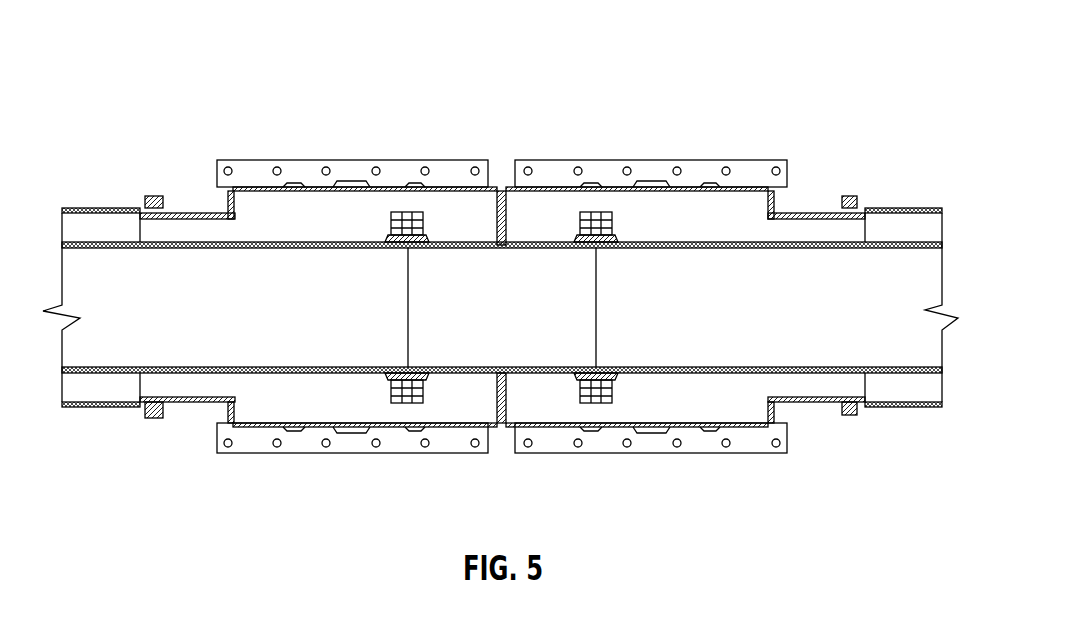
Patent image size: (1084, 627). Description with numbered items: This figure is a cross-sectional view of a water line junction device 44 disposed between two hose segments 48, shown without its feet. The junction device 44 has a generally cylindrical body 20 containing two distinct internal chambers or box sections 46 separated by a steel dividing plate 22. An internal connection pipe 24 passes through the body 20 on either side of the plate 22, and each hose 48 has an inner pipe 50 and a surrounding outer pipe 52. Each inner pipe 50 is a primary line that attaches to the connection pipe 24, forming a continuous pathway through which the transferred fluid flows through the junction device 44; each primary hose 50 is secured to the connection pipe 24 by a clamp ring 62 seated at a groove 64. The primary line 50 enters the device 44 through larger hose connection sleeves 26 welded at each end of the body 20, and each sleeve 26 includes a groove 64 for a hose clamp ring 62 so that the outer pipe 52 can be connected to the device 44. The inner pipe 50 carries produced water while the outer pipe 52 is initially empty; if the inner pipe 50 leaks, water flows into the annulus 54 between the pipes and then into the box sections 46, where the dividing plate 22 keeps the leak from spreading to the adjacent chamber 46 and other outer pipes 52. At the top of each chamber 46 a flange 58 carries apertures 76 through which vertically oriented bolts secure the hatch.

The cylindrical body 20 is at (706, 446).
The dividing plate 22 is at (503, 427).
The internal connection pipe 24 is at (583, 282).
The hose connection sleeve 26 is at (853, 230).
The water line junction device 44 is at (876, 42).
The box section 46 is at (275, 402).
The hose segment 48 is at (104, 188).
The inner pipe 50 is at (120, 249).
The outer pipe 52 is at (75, 208).
The annulus 54 is at (72, 388).
The flange 58 is at (298, 170).
The clamp ring 62 is at (152, 196).
The groove 64 is at (845, 196).
The aperture 76 is at (627, 168).